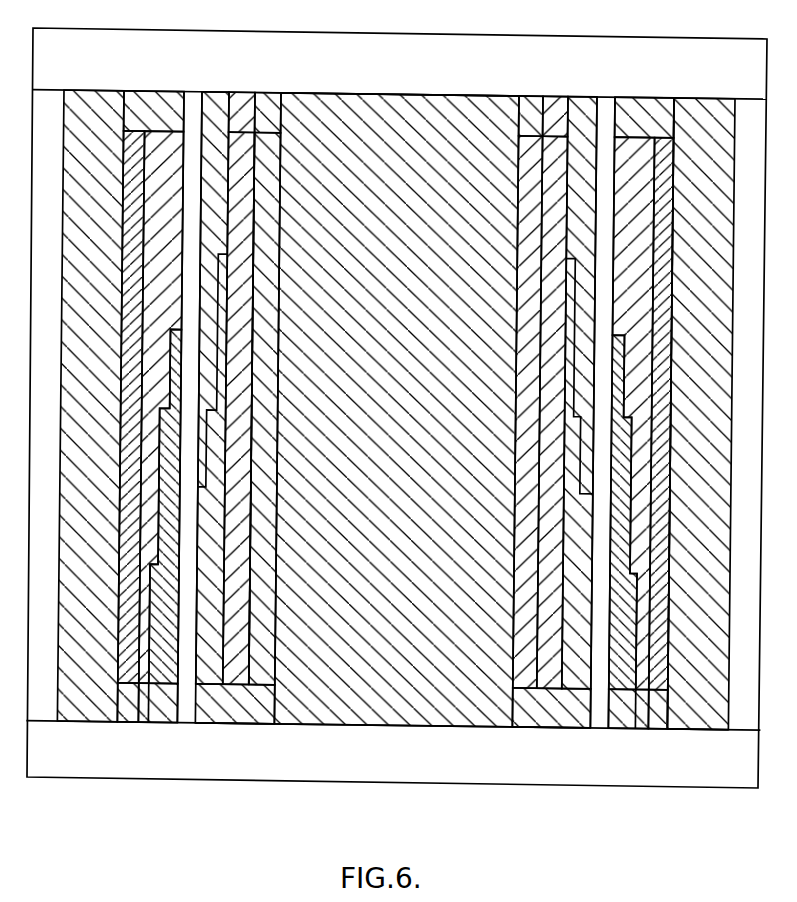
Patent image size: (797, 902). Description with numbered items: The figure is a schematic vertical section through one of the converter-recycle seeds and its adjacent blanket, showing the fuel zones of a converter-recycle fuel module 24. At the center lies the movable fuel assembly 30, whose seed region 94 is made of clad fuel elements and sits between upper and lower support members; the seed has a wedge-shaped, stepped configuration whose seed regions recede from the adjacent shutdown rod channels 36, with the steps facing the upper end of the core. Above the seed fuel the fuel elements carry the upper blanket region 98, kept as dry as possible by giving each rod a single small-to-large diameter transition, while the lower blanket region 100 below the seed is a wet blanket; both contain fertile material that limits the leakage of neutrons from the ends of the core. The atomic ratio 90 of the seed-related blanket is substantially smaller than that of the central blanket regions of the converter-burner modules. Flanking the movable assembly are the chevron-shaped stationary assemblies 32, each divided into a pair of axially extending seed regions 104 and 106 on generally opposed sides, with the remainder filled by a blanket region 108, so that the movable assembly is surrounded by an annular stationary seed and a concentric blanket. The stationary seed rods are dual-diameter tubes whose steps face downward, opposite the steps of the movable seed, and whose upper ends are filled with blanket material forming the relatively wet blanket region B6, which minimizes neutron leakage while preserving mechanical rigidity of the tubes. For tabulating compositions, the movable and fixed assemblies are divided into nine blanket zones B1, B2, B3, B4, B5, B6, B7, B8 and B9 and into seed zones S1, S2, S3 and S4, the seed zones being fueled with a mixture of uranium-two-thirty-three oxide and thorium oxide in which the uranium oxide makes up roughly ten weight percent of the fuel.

The blanket region 108 is at (111, 89).
The upper blanket region 98 is at (199, 89).
The converter-recycle fuel module 24 is at (386, 86).
The atomic ratio 90 is at (411, 108).
The shutdown rod channel 36 is at (611, 107).
The seed region 106 is at (691, 413).
The seed region 104 is at (136, 573).
The seed region 94 is at (268, 553).
The lower blanket region 100 is at (232, 723).
The movable fuel assembly 30 is at (535, 728).
The chevron-shaped stationary assembly 32 is at (708, 728).
The blanket zone B1 is at (411, 399).
The blanket zone B2 is at (275, 120).
The blanket zone B3 is at (249, 120).
The blanket zone B4 is at (227, 149).
The blanket zone B5 is at (246, 713).
The blanket region B6 is at (163, 117).
The blanket zone B7 is at (170, 710).
The blanket zone B8 is at (140, 706).
The blanket zone B9 is at (103, 374).
The seed zone S1 is at (273, 612).
The seed zone S2 is at (245, 637).
The seed zone S3 is at (142, 235).
The seed zone S4 is at (173, 272).